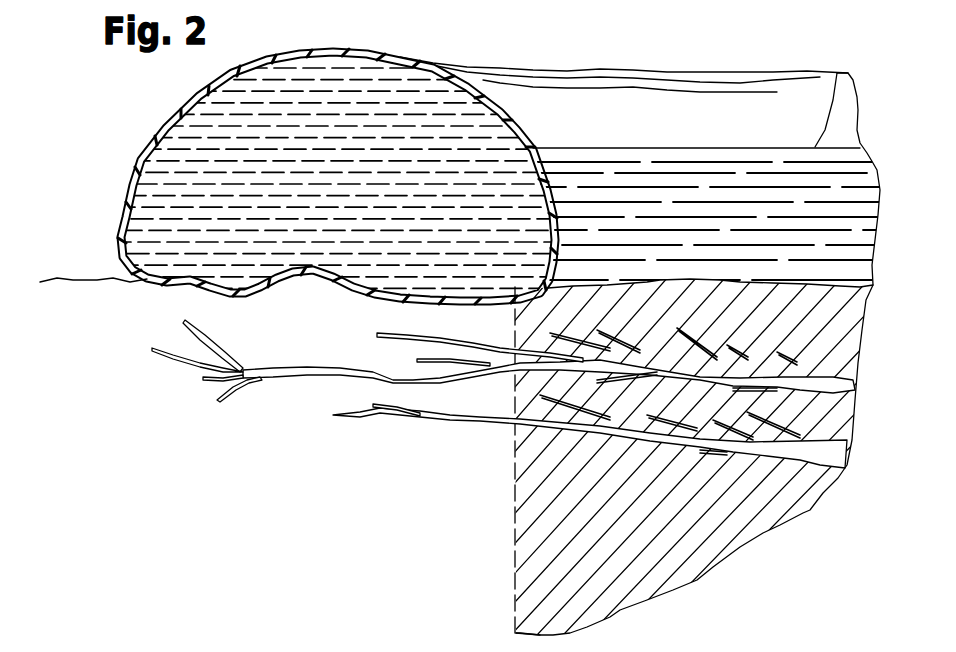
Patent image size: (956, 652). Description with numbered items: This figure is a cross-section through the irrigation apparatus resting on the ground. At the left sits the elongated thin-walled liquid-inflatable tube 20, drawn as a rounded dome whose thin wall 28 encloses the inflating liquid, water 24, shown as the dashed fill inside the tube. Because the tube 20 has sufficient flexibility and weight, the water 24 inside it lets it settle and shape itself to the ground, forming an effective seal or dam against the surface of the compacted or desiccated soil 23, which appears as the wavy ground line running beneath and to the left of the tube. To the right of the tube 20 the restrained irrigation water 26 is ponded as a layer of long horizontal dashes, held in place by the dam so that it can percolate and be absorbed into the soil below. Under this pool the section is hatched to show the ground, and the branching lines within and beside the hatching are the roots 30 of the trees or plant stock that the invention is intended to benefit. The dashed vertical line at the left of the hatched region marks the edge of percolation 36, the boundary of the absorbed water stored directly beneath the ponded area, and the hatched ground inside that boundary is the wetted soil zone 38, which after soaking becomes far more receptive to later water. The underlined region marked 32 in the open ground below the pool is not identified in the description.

The liquid-inflatable tube 20 is at (655, 105).
The compacted or desiccated soil 23 is at (82, 281).
The water 24 is at (225, 137).
The irrigation water 26 is at (836, 72).
The thin wall 28 is at (312, 52).
The roots 30 is at (393, 415).
The soil body 32 is at (440, 543).
The edge of percolation 36 is at (513, 605).
The wetted soil zone 38 is at (650, 527).